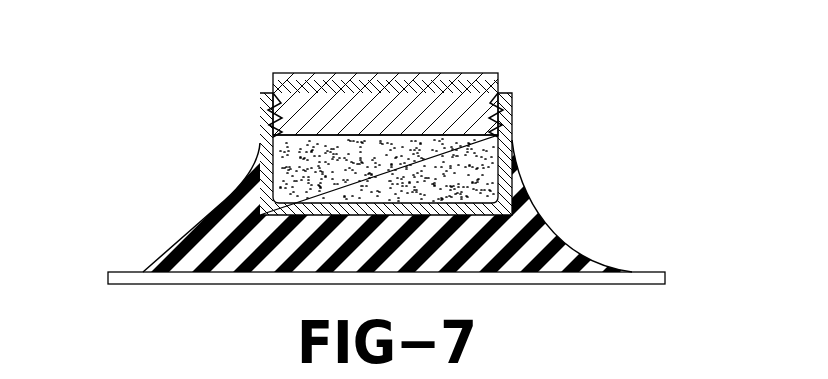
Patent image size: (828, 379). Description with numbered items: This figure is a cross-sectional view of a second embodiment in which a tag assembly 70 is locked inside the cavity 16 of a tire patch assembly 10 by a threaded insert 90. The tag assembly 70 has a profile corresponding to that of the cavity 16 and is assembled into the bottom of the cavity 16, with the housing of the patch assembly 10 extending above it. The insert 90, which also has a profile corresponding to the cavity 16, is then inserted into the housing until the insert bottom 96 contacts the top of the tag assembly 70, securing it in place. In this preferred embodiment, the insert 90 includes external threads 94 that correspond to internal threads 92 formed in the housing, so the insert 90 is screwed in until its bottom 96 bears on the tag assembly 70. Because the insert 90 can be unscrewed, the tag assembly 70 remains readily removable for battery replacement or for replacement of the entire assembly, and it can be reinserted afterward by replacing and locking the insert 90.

The patch assembly 10 is at (153, 261).
The cavity 16 is at (273, 160).
The tag assembly 70 is at (344, 157).
The insert 90 is at (398, 73).
The internal threads 92 is at (273, 126).
The external threads 94 is at (494, 110).
The insert bottom 96 is at (448, 137).